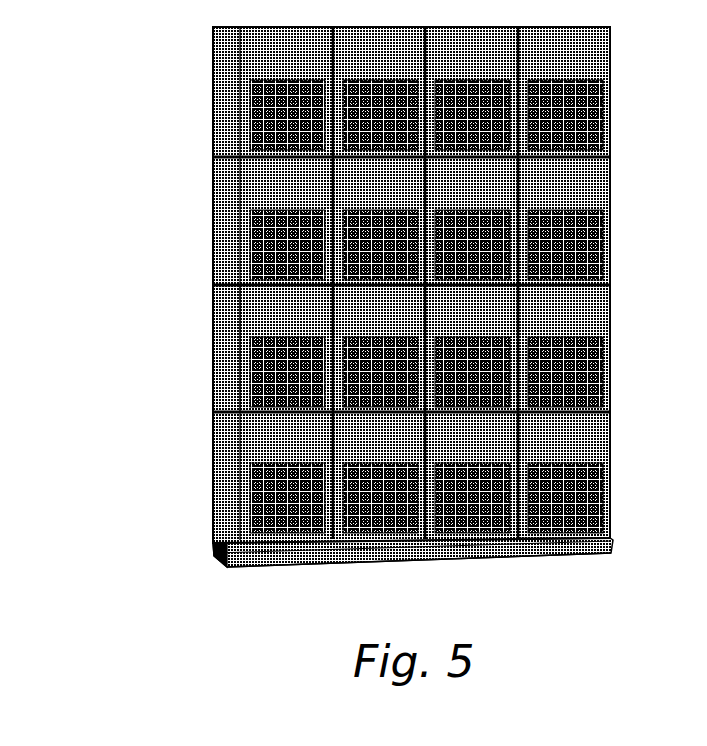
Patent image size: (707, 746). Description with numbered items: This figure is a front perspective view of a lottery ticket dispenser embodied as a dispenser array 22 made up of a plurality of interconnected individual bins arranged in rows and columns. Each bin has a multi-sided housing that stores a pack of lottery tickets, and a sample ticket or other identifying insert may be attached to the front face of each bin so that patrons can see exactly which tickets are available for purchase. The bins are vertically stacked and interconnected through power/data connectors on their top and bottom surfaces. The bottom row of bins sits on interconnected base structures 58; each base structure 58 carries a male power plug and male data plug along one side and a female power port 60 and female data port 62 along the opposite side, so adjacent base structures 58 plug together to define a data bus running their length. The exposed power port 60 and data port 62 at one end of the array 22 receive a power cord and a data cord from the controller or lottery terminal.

The dispenser array 22 is at (100, 124).
The base structure 58 is at (560, 548).
The female power port 60 is at (225, 563).
The female data port 62 is at (213, 550).